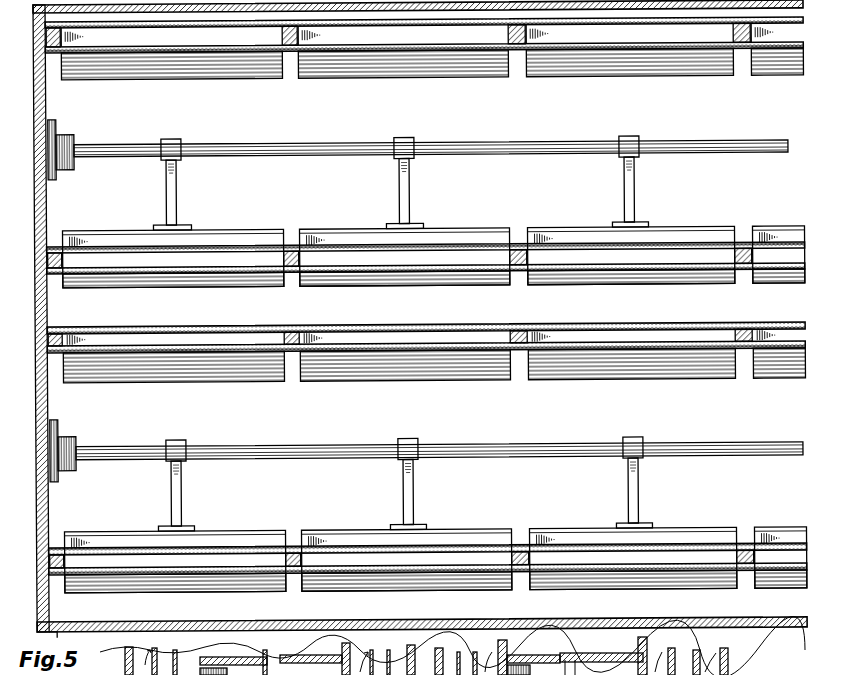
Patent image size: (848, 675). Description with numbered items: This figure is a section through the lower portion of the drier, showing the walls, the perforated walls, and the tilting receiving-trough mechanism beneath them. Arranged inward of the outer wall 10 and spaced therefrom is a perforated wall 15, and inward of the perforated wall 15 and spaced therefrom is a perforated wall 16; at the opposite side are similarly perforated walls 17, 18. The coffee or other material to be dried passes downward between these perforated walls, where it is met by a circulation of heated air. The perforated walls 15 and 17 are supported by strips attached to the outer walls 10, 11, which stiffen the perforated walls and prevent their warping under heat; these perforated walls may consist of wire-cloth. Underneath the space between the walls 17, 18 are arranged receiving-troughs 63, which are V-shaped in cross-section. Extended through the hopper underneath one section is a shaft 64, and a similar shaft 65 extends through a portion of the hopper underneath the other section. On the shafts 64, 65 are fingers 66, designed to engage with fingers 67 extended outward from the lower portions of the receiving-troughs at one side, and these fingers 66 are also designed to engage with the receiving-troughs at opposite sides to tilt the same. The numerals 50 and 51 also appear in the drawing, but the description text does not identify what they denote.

The outer wall 10 is at (730, 669).
The outer wall 11 is at (418, 665).
The perforated wall 15 is at (474, 568).
The perforated wall 16 is at (463, 560).
The perforated wall 17 is at (431, 346).
The perforated wall 18 is at (473, 331).
The plate 50 is at (325, 670).
The plate 51 is at (315, 659).
The receiving-trough 63 is at (634, 384).
The shaft 64 is at (525, 448).
The shaft 65 is at (547, 146).
The finger 66 is at (636, 194).
The finger 67 is at (644, 227).